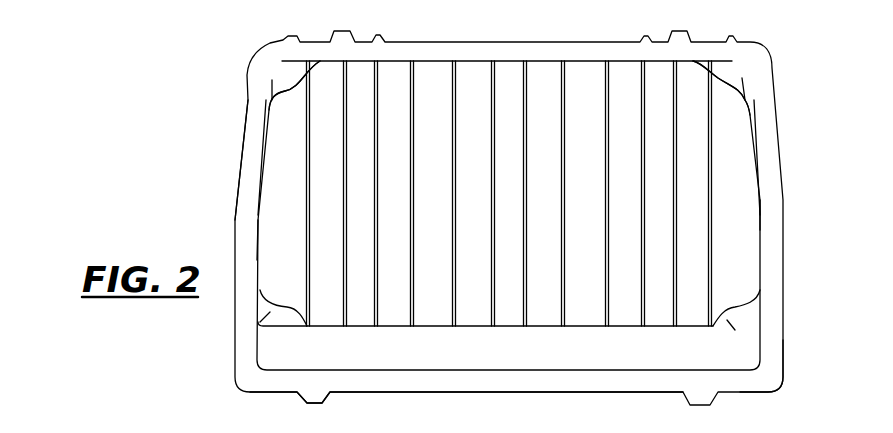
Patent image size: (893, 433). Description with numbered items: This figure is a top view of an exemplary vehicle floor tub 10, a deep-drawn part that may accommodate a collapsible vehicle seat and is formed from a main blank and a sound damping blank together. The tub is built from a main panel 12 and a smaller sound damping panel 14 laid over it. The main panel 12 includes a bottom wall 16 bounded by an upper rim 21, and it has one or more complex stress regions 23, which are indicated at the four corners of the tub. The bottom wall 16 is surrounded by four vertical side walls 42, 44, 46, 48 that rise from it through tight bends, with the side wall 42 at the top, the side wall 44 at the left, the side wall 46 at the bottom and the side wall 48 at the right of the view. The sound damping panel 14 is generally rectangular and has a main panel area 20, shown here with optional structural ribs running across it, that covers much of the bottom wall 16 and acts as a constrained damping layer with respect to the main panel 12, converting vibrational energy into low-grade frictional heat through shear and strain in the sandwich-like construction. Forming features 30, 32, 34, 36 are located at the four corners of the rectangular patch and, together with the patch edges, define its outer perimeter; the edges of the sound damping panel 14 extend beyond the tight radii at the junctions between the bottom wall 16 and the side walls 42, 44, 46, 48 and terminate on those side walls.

The vehicle floor tub 10 is at (200, 115).
The main panel 12 is at (765, 100).
The sound damping panel 14 is at (282, 188).
The bottom wall 16 is at (740, 318).
The main panel area 20 is at (595, 203).
The upper rim 21 is at (257, 380).
The complex stress regions 23 is at (270, 78).
The forming feature 30 is at (297, 83).
The forming feature 32 is at (290, 307).
The forming feature 34 is at (725, 327).
The forming feature 36 is at (730, 85).
The vertical side wall 42 is at (572, 68).
The vertical side wall 44 is at (258, 222).
The vertical side wall 46 is at (573, 326).
The vertical side wall 48 is at (761, 207).